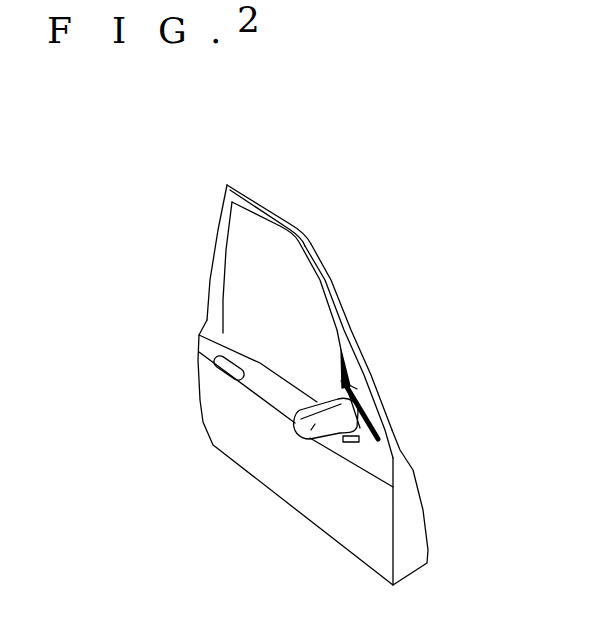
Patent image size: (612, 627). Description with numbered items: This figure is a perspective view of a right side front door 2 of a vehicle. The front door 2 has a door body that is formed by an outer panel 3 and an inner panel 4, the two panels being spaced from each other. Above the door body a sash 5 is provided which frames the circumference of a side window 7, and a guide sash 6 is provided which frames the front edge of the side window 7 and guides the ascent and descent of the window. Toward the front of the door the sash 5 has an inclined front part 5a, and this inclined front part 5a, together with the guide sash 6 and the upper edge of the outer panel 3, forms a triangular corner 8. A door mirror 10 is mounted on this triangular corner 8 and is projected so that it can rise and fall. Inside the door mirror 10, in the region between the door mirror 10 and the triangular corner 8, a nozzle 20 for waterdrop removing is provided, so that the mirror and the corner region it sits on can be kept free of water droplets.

The front door 2 is at (144, 411).
The outer panel 3 is at (313, 495).
The inner panel 4 is at (415, 473).
The sash 5 is at (280, 218).
The inclined front part of the sash 5a is at (357, 344).
The guide sash 6 is at (341, 354).
The side window 7 is at (252, 272).
The triangular corner 8 is at (345, 383).
The door mirror 10 is at (306, 437).
The nozzle 20 is at (358, 408).